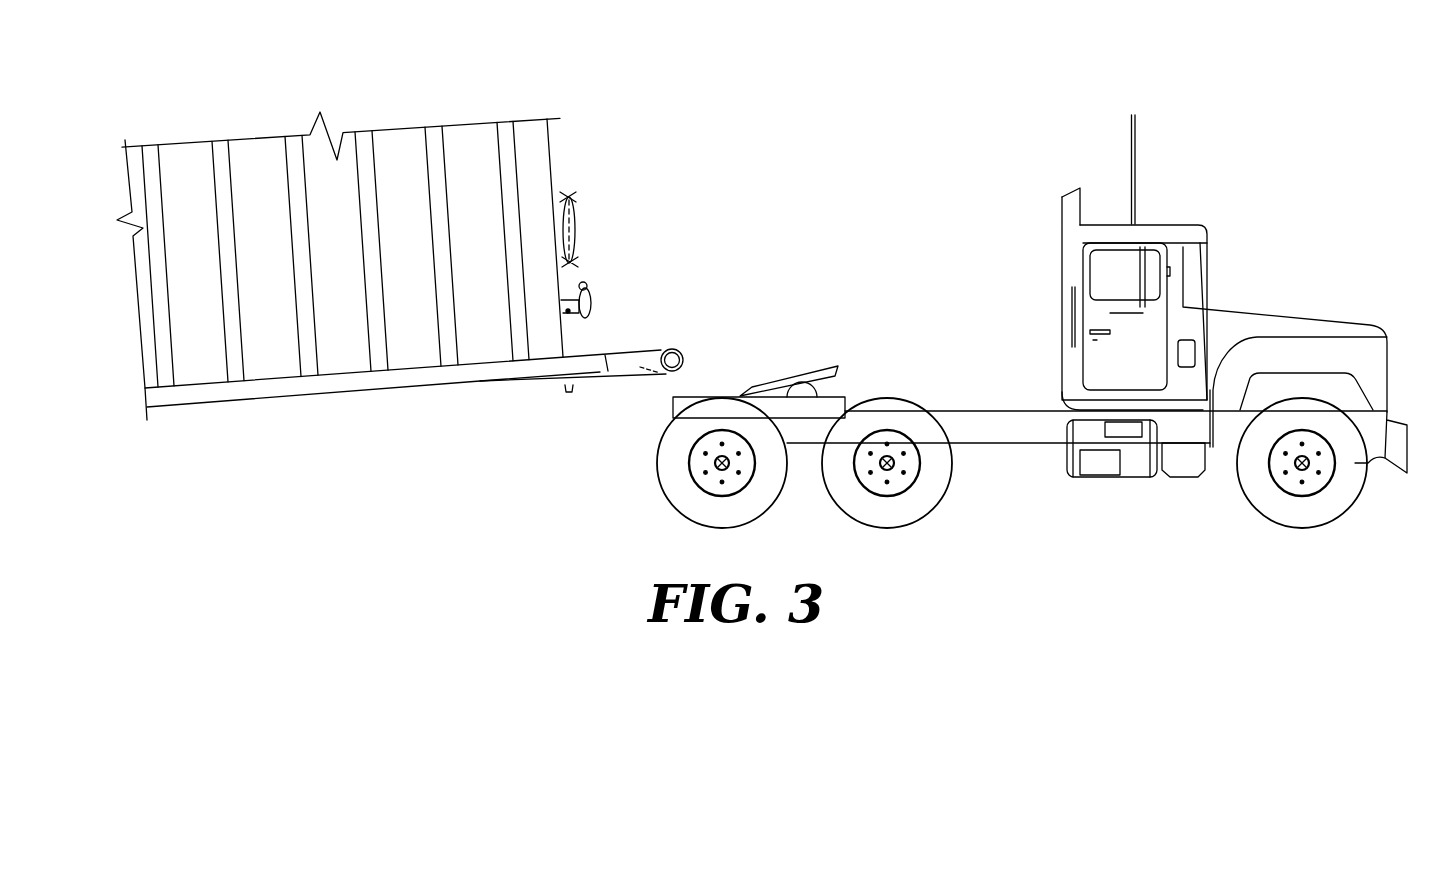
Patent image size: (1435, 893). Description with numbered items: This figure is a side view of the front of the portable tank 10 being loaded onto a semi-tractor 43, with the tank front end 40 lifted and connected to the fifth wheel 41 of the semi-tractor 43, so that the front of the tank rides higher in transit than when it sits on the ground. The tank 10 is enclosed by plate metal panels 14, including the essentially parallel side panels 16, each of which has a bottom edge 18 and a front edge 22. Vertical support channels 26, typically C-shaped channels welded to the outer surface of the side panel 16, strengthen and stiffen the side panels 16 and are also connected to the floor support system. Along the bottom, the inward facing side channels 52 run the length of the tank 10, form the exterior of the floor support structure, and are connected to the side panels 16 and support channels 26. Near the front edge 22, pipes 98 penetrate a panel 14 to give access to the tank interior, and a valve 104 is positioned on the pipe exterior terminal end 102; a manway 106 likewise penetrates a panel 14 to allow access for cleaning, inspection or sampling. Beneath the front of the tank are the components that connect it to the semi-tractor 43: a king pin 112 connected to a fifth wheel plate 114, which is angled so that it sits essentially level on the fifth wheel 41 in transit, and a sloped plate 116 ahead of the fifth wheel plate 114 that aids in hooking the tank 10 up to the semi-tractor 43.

The portable tank 10 is at (605, 56).
The panels 14 is at (415, 157).
The side panels 16 is at (395, 143).
The bottom edge 18 is at (197, 388).
The front edge 22 is at (550, 152).
The support channels 26 is at (292, 160).
The tank front end 40 is at (636, 177).
The fifth wheel 41 is at (827, 367).
The semi-tractor 43 is at (1168, 232).
The side channels 52 is at (322, 383).
The pipes 98 is at (567, 311).
The pipe exterior terminal end 102 is at (568, 313).
The valve 104 is at (593, 303).
The manways 106 is at (568, 232).
The king pin 112 is at (570, 392).
The fifth wheel plate 114 is at (523, 385).
The sloped plate 116 is at (667, 380).